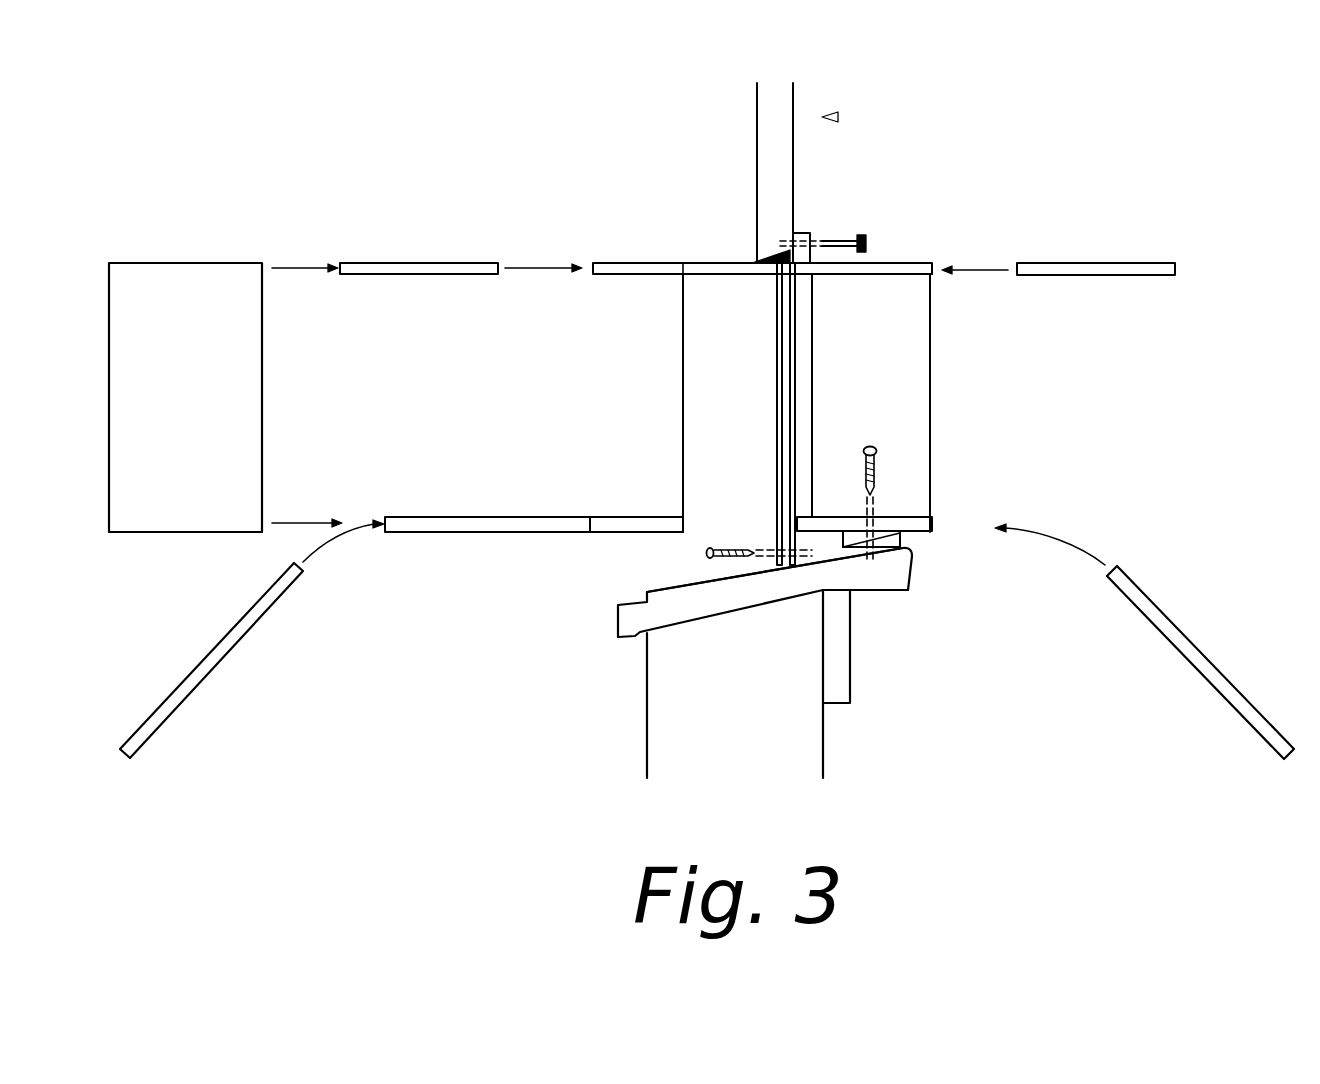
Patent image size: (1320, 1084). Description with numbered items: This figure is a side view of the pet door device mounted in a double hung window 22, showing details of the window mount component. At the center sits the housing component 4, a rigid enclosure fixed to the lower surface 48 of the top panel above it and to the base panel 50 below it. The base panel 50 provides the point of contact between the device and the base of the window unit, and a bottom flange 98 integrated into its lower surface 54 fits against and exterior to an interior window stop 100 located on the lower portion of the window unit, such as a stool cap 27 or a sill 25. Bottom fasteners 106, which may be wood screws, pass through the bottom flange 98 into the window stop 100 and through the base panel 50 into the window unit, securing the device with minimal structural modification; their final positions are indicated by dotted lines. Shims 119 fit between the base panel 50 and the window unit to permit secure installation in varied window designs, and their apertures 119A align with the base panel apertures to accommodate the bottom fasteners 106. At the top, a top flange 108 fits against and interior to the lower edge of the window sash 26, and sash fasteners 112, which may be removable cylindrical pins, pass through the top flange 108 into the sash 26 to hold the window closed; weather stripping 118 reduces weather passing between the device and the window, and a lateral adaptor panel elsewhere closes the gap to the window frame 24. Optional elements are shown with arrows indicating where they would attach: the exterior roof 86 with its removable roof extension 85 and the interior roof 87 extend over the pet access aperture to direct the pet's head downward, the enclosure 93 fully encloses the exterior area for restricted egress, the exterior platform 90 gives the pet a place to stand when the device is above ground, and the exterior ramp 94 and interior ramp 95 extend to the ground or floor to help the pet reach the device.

The housing component 4 is at (931, 375).
The double hung window 22 is at (838, 117).
The window frame 24 is at (777, 103).
The sill 25 is at (617, 638).
The window sash 26 is at (750, 178).
The stool cap 27 is at (915, 572).
The lower surface of the top panel 48 is at (870, 275).
The base panel 50 is at (936, 522).
The lower surface of the base panel 54 is at (903, 542).
The roof extension 85 is at (417, 263).
The exterior roof 86 is at (652, 263).
The interior roof 87 is at (1097, 263).
The exterior platform 90 is at (515, 517).
The enclosure 93 is at (218, 263).
The exterior ramp 94 is at (207, 652).
The interior ramp 95 is at (1147, 590).
The bottom flange 98 is at (775, 535).
The interior window stop 100 is at (812, 562).
The bottom fasteners 106 is at (878, 456).
The top flange 108 is at (813, 253).
The sash fasteners 112 is at (838, 240).
The weather stripping 118 is at (757, 262).
The shims 119 is at (912, 552).
The shim apertures 119A is at (878, 548).